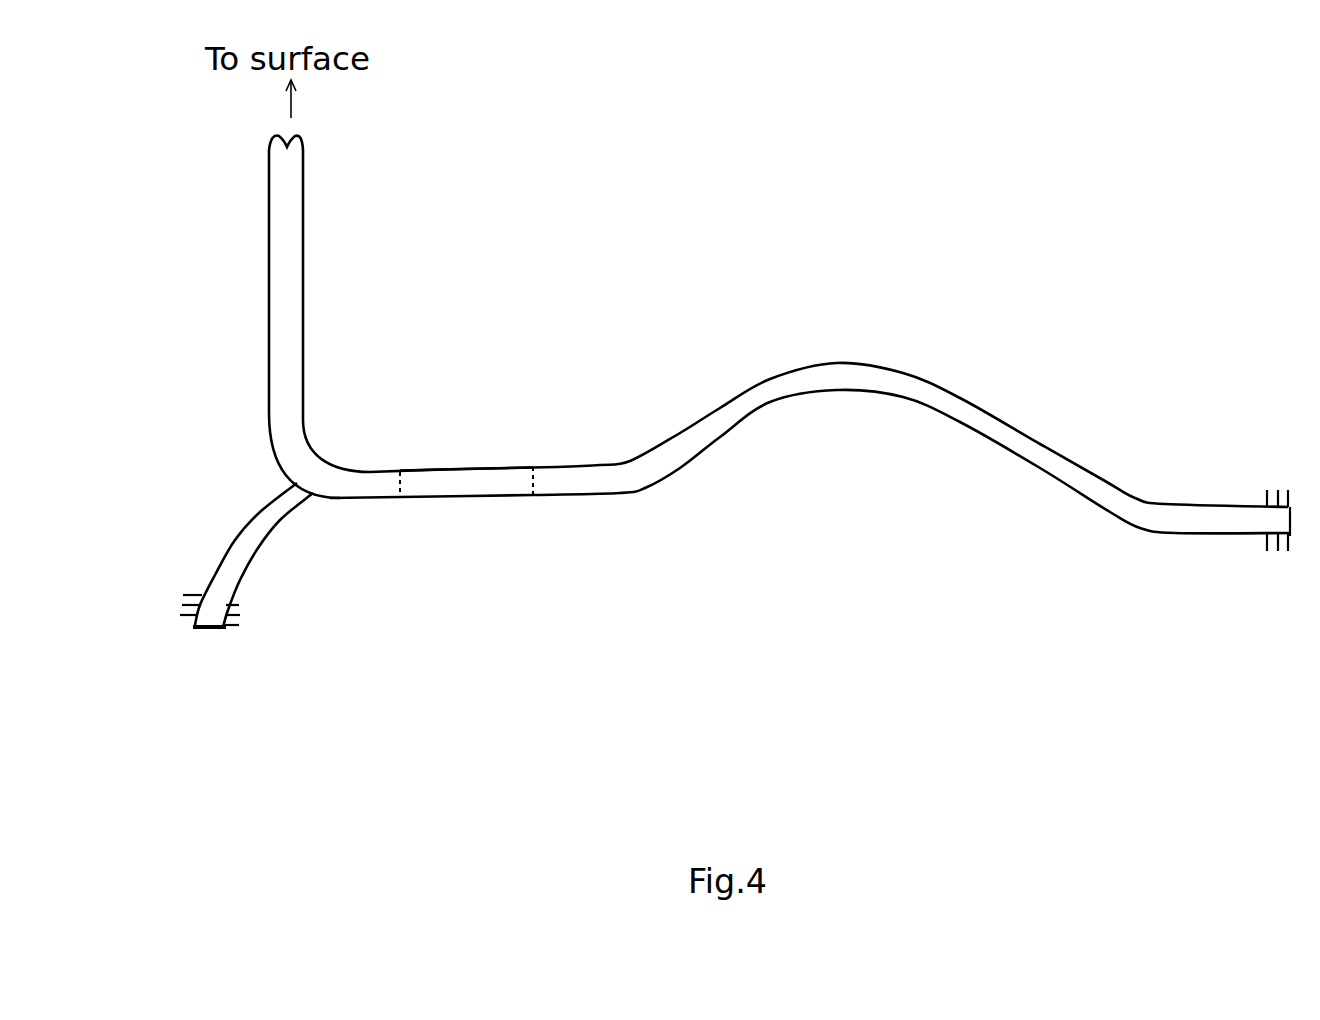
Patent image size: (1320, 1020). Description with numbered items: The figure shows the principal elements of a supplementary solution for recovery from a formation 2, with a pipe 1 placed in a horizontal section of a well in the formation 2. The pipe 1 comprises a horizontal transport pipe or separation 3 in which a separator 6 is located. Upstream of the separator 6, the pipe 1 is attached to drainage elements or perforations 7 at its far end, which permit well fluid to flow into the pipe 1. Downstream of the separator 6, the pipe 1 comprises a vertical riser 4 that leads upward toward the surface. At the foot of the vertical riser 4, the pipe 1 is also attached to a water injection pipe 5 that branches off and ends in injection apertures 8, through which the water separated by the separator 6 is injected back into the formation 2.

The pipe 1 is at (390, 445).
The formation 2 is at (672, 357).
The horizontal transport pipe 3 is at (563, 444).
The vertical riser 4 is at (293, 310).
The water injection pipe 5 is at (235, 540).
The separator 6 is at (466, 432).
The drainage elements or perforations 7 is at (1281, 486).
The injection apertures 8 is at (235, 612).